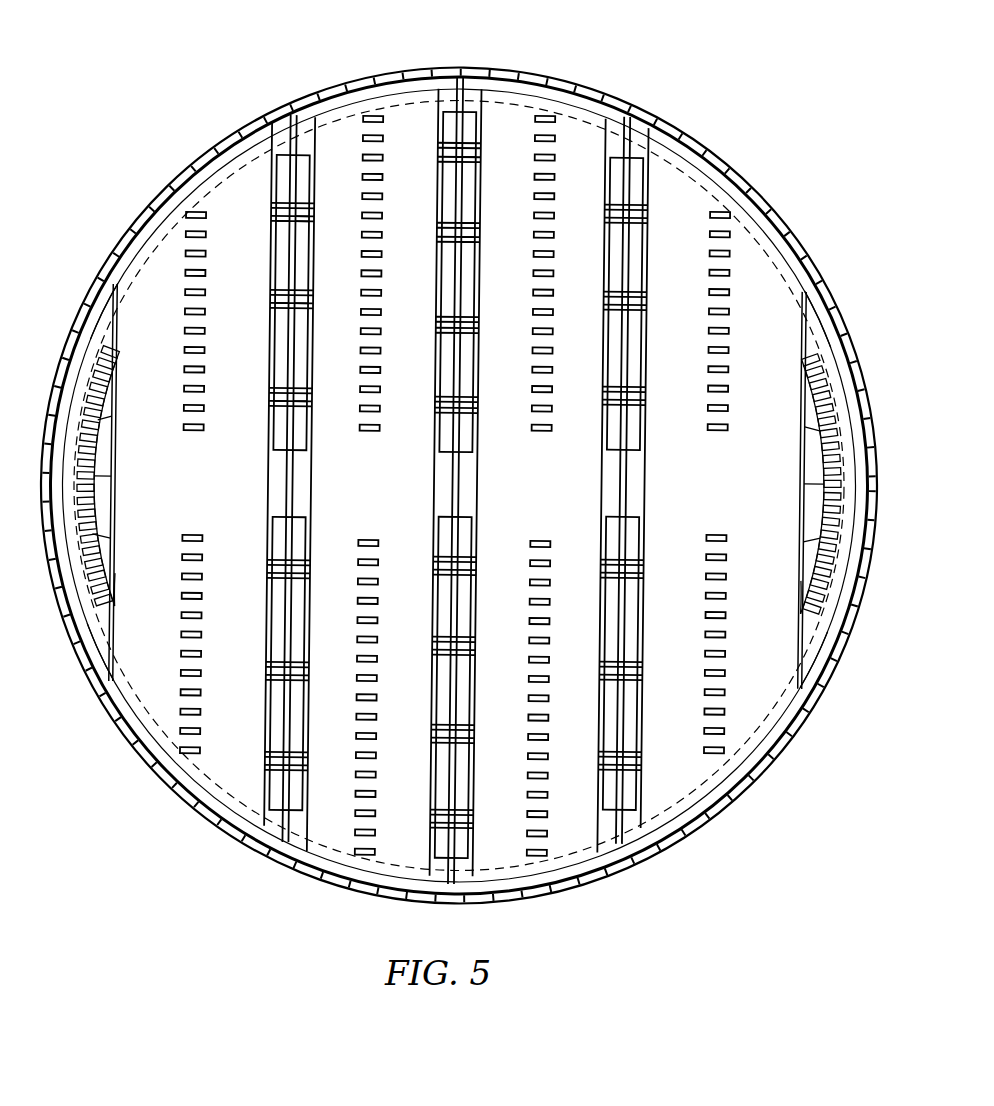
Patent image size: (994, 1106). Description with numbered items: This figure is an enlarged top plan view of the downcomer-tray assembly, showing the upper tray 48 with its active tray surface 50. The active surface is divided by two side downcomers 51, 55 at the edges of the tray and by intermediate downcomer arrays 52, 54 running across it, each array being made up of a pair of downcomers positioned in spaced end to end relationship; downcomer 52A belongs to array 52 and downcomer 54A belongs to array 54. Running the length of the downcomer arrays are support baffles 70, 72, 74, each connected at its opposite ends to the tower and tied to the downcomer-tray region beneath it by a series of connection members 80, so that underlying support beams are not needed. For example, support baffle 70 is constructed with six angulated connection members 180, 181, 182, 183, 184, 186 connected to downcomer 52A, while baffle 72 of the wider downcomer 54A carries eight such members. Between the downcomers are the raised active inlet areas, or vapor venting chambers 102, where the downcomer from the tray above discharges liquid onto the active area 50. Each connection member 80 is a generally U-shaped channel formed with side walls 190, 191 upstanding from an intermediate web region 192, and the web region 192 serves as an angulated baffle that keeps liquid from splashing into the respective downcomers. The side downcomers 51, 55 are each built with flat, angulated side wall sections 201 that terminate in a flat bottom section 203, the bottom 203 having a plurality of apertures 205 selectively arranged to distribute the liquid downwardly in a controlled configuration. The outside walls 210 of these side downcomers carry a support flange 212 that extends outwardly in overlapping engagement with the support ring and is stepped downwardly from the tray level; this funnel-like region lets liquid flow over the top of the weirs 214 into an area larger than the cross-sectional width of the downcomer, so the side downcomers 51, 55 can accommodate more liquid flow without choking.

The upper tray 48 is at (508, 99).
The active tray surface 50 is at (684, 181).
The side downcomer 51 is at (106, 446).
The downcomer array 52 is at (282, 484).
The downcomer 52A is at (280, 186).
The downcomer array 54 is at (412, 459).
The downcomer 54A is at (438, 353).
The side downcomer 55 is at (830, 351).
The support baffle 70 is at (288, 124).
The support baffle 72 is at (453, 80).
The support baffle 74 is at (621, 120).
The connection member 80 is at (464, 132).
The vapor venting chamber 102 is at (543, 435).
The angulated connection member 180 is at (281, 227).
The angulated connection member 181 is at (281, 299).
The angulated connection member 182 is at (282, 401).
The angulated connection member 183 is at (302, 402).
The angulated connection member 184 is at (298, 302).
The angulated connection member 186 is at (301, 226).
The side wall 190 is at (464, 220).
The side wall 191 is at (467, 252).
The intermediate web region 192 is at (465, 235).
The angulated side wall section 201 is at (100, 472).
The flat bottom section 203 is at (109, 566).
The aperture 205 is at (106, 596).
The outside wall 210 is at (94, 322).
The support flange 212 is at (92, 665).
The weir 214 is at (114, 652).